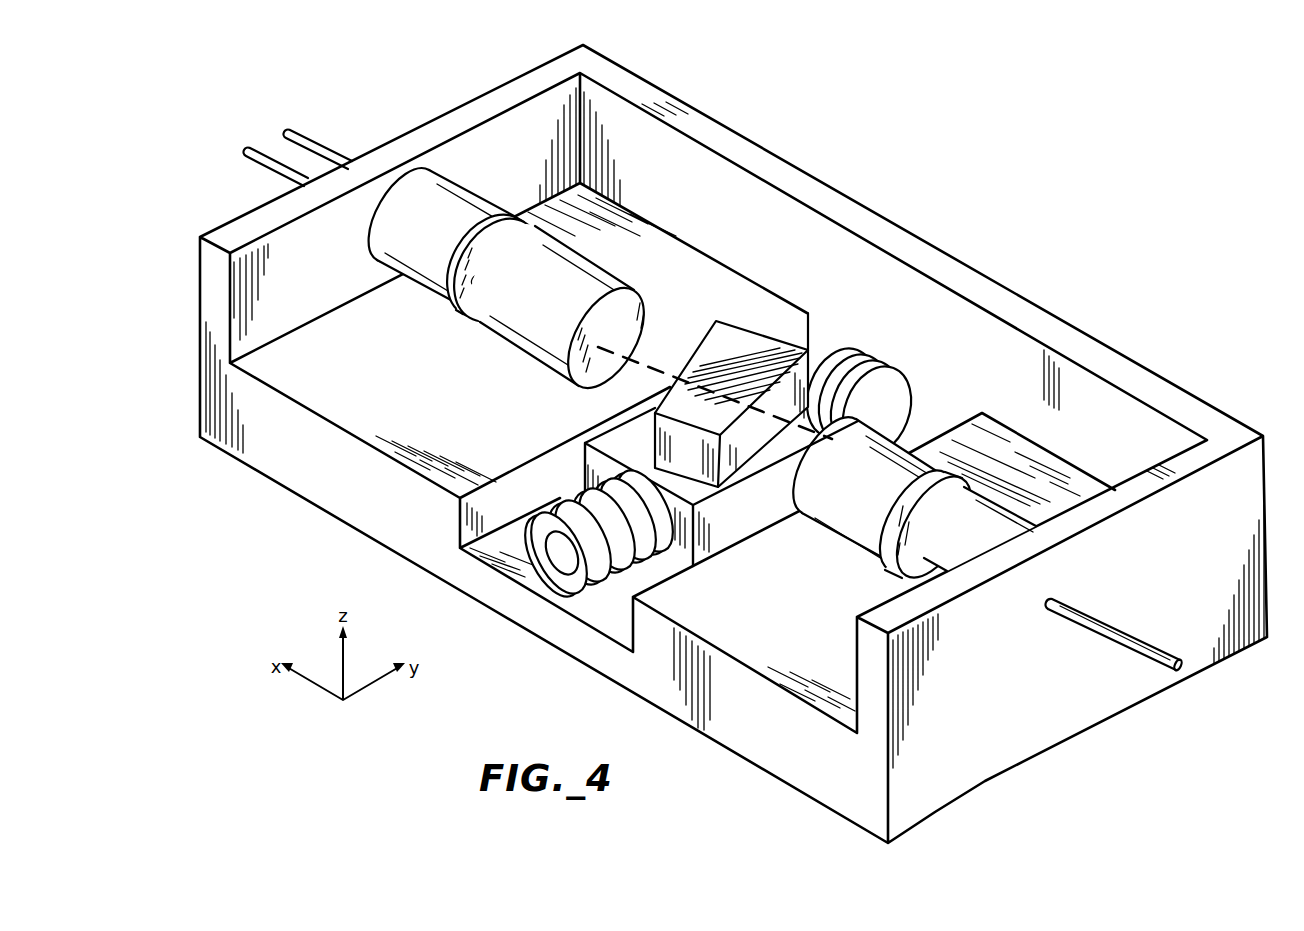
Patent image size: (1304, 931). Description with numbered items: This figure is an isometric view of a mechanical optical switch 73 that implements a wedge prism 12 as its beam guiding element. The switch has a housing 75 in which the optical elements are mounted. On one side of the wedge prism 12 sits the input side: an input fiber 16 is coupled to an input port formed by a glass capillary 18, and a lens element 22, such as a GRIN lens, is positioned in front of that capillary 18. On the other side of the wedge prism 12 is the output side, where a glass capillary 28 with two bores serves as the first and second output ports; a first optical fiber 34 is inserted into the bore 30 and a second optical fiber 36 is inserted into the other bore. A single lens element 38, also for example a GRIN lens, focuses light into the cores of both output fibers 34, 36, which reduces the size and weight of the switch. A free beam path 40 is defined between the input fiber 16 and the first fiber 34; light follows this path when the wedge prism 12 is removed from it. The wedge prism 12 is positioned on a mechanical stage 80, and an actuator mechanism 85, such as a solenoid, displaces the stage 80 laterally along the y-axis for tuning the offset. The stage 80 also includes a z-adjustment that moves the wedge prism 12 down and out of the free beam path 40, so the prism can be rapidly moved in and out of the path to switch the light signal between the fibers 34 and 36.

The wedge prism 12 is at (726, 326).
The input fiber 16 is at (1108, 634).
The glass capillary 18 is at (981, 516).
The lens element 22 is at (843, 513).
The glass capillary 28 is at (410, 187).
The bore 30 is at (458, 312).
The first optical fiber 34 is at (247, 165).
The second optical fiber 36 is at (303, 128).
The lens element 38 is at (585, 271).
The free beam path 40 is at (646, 362).
The mechanical optical switch 73 is at (728, 444).
The housing 75 is at (841, 193).
The mechanical stage 80 is at (612, 444).
The actuator mechanism 85 is at (567, 582).